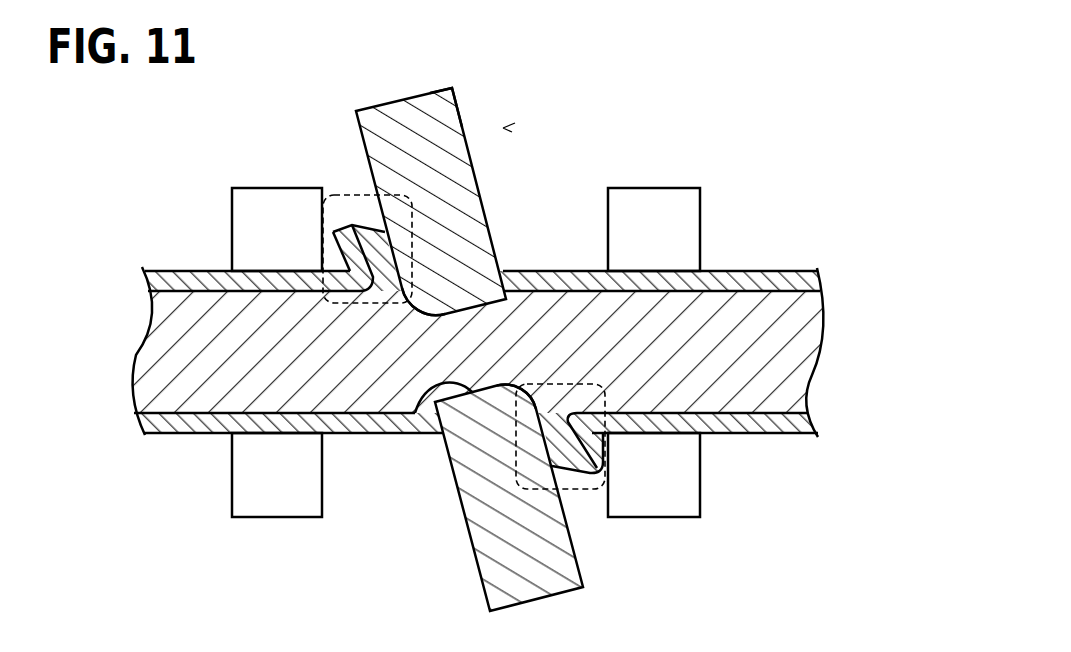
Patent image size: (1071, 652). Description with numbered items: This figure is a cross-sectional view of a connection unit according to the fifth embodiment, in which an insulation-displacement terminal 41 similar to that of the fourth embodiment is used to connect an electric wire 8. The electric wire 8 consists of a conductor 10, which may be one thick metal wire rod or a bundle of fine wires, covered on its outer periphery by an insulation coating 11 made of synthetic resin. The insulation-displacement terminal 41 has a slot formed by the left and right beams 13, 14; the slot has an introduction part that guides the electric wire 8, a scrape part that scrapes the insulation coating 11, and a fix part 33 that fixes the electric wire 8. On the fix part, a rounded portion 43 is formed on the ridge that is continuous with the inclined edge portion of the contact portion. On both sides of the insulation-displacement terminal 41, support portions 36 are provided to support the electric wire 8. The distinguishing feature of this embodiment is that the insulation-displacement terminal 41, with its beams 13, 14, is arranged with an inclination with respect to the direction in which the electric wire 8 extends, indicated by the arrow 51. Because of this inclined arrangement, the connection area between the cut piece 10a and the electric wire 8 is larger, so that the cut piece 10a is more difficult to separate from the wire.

The electric wire 8 is at (500, 360).
The conductor 10 is at (200, 308).
The cut piece 10a is at (360, 227).
The insulation coating 11 is at (358, 433).
The left side beam portion 13 is at (492, 555).
The right side beam 14 is at (452, 183).
The fix part 33 is at (415, 413).
The support portion 36 is at (247, 197).
The insulation-displacement terminal 41 is at (462, 91).
The rounded portion 43 is at (408, 300).
The cutting direction 51 is at (503, 128).